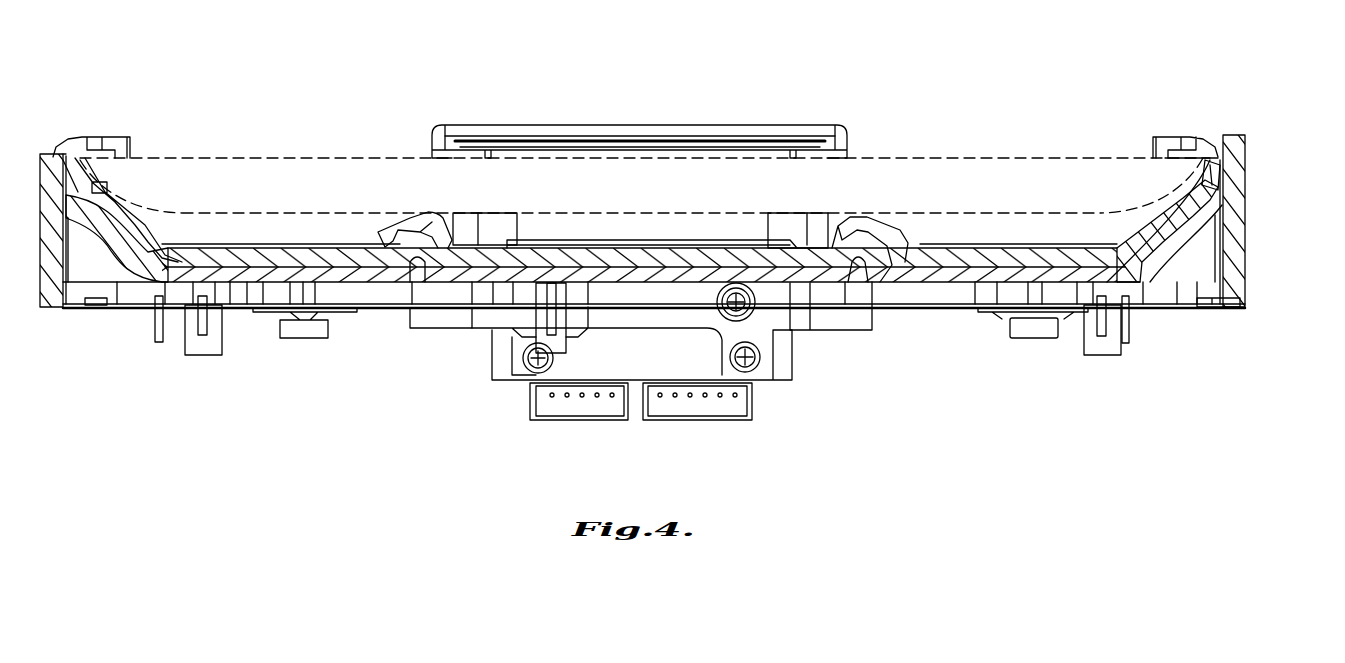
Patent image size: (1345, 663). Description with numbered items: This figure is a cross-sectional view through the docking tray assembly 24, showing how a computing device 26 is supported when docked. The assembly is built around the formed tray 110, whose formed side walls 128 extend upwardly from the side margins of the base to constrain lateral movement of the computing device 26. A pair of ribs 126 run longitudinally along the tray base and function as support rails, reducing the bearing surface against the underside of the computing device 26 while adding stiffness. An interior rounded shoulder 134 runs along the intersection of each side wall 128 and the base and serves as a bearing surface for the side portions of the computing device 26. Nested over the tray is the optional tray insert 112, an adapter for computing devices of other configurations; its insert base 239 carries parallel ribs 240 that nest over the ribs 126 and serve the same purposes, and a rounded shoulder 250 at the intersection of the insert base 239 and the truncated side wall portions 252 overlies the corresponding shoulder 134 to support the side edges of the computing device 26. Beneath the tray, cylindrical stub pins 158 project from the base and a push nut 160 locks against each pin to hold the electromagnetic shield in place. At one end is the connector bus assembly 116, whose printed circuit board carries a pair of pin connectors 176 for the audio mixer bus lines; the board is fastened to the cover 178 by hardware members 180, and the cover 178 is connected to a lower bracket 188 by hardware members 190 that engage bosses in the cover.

The docking tray assembly 24 is at (1215, 103).
The computing device 26 is at (235, 157).
The formed tray 110 is at (905, 315).
The tray insert 112 is at (1148, 296).
The connector bus assembly 116 is at (514, 113).
The ribs 126 is at (848, 283).
The side walls 128 is at (1255, 218).
The rounded shoulder 134 is at (1190, 300).
The stub pins 158 is at (1033, 339).
The push nut 160 is at (990, 314).
The pin connectors 176 is at (555, 410).
The cover 178 is at (697, 125).
The hardware members 180 is at (748, 320).
The lower bracket 188 is at (727, 338).
The hardware members 190 is at (546, 375).
The insert base 239 is at (1000, 232).
The ribs 240 is at (872, 220).
The rounded shoulder 250 is at (1147, 213).
The truncated side wall portions 252 is at (1220, 173).